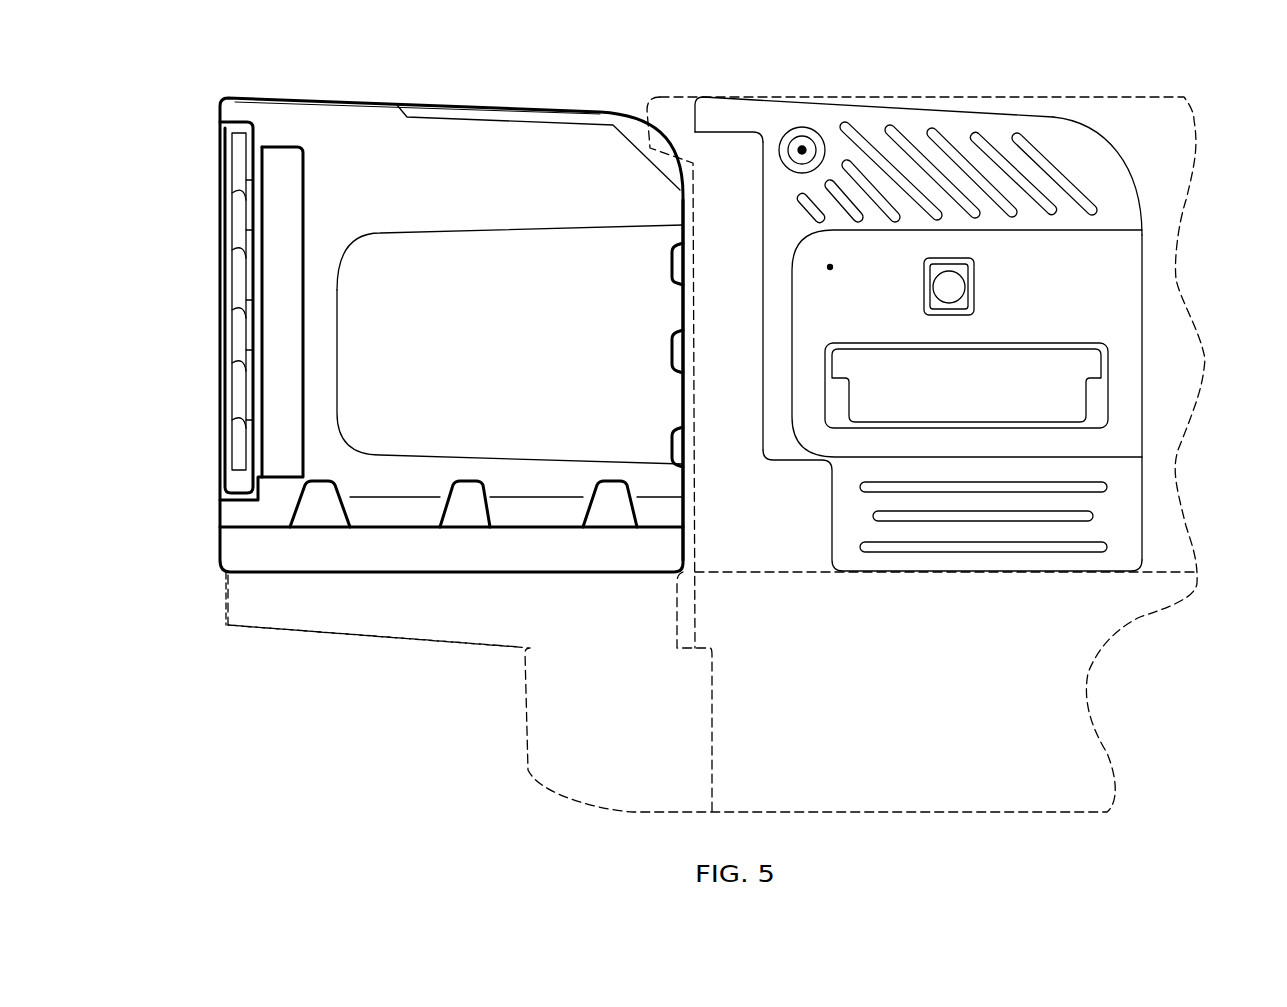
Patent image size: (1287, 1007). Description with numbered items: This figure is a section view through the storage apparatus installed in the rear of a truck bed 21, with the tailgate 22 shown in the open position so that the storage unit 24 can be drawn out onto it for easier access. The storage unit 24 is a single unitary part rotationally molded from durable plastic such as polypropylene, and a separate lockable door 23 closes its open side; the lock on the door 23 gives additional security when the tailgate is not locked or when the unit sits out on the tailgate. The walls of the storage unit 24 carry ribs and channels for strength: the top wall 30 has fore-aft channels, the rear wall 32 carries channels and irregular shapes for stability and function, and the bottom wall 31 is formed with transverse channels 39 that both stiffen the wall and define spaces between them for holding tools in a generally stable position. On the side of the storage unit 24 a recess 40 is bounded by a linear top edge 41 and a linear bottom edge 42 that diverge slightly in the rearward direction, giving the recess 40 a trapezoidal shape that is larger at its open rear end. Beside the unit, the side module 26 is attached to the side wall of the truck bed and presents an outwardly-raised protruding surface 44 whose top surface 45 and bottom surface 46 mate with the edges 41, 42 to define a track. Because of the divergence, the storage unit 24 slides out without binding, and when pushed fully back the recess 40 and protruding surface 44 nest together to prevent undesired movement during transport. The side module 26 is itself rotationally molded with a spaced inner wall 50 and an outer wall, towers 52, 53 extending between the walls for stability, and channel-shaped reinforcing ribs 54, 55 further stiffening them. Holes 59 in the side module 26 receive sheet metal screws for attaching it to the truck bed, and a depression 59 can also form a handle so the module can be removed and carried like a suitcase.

The truck bed 21 is at (1170, 572).
The tailgate 22 is at (226, 600).
The lockable door 23 is at (218, 158).
The storage unit 24 is at (460, 108).
The side module 26 is at (970, 105).
The top wall 30 is at (297, 97).
The bottom wall 31 is at (277, 575).
The rear wall 32 is at (688, 310).
The transverse channels 39 is at (312, 488).
The recess 40 is at (413, 300).
The top edge 41 is at (443, 232).
The bottom edge 42 is at (417, 460).
The protruding surface 44 is at (1128, 280).
The top surface 45 is at (1108, 228).
The bottom surface 46 is at (1118, 463).
The inner wall 50 is at (1108, 160).
The tower 52 is at (783, 134).
The tower 53 is at (975, 316).
The channel-shaped reinforcing ribs 54 is at (948, 122).
The channel-shaped reinforcing ribs 55 is at (958, 488).
The holes 59 is at (808, 140).